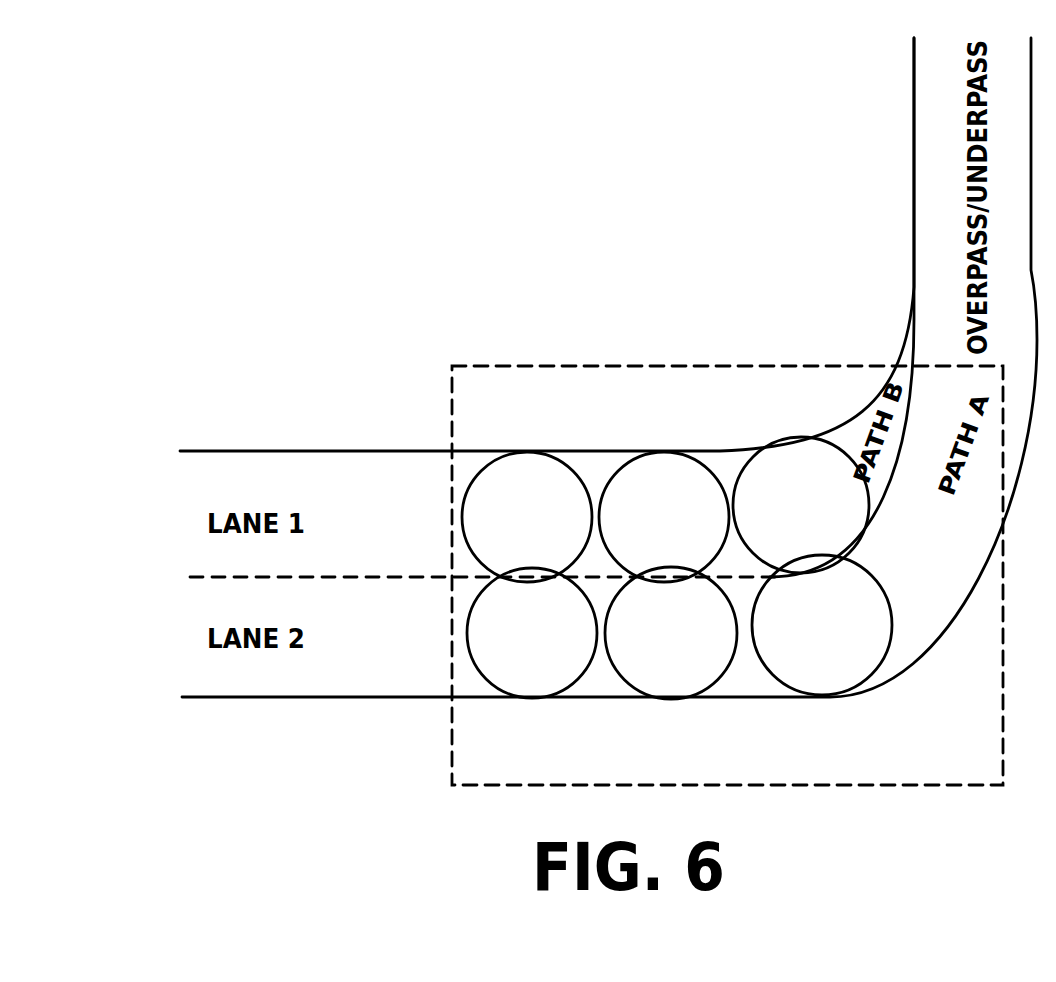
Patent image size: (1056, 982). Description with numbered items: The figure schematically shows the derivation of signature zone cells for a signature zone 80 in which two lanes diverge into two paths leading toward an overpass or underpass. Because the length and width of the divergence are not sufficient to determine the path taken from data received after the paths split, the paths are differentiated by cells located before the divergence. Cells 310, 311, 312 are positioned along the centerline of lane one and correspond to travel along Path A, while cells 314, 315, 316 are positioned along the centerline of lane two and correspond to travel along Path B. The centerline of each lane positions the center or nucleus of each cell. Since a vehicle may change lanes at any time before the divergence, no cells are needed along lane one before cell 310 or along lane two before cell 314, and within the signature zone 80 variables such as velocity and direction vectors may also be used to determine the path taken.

The signature zone 80 is at (727, 575).
The signature zone cell 310 is at (568, 463).
The signature zone cell 311 is at (706, 463).
The signature zone cell 312 is at (827, 441).
The signature zone cell 314 is at (585, 672).
The signature zone cell 315 is at (717, 673).
The signature zone cell 316 is at (868, 673).